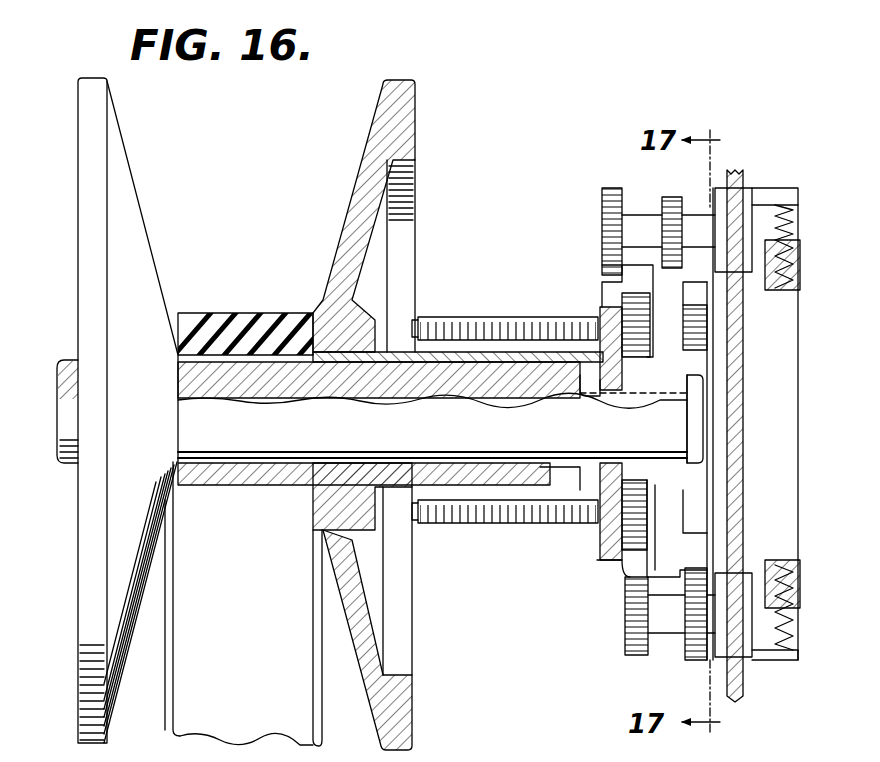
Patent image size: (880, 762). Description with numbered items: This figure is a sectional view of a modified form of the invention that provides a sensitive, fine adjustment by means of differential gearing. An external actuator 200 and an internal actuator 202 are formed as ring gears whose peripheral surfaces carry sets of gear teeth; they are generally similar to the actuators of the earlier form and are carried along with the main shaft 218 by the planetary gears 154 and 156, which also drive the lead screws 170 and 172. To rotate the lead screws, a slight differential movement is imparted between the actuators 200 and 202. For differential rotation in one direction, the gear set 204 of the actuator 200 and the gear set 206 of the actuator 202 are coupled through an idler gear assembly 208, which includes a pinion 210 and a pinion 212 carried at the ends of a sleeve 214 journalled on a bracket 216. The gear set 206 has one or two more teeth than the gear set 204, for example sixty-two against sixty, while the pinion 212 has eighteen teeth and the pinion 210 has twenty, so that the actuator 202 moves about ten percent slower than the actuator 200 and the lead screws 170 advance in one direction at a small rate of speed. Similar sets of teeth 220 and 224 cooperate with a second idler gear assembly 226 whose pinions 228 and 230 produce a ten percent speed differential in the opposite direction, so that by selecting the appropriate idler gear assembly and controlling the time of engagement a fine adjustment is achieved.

The planetary gear 154 is at (643, 333).
The planetary gear 156 is at (622, 490).
The lead screw 170 is at (452, 316).
The lead screw 172 is at (455, 524).
The external actuator 200 is at (600, 290).
The internal actuator 202 is at (690, 505).
The gear set 204 is at (610, 278).
The gear set 206 is at (683, 265).
The idler gear assembly 208 is at (632, 186).
The pinion 210 is at (602, 200).
The pinion 212 is at (667, 197).
The sleeve 214 is at (632, 228).
The bracket 216 is at (714, 228).
The main shaft 218 is at (440, 419).
The set of teeth 220 is at (627, 577).
The set of teeth 224 is at (693, 562).
The idler gear assembly 226 is at (662, 658).
The pinion 228 is at (627, 644).
The pinion 230 is at (703, 657).